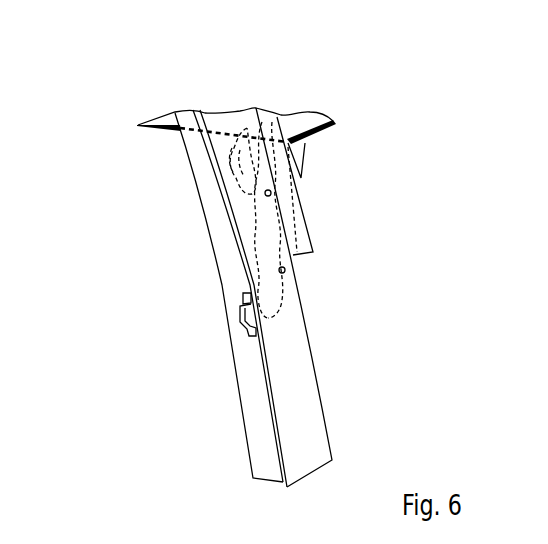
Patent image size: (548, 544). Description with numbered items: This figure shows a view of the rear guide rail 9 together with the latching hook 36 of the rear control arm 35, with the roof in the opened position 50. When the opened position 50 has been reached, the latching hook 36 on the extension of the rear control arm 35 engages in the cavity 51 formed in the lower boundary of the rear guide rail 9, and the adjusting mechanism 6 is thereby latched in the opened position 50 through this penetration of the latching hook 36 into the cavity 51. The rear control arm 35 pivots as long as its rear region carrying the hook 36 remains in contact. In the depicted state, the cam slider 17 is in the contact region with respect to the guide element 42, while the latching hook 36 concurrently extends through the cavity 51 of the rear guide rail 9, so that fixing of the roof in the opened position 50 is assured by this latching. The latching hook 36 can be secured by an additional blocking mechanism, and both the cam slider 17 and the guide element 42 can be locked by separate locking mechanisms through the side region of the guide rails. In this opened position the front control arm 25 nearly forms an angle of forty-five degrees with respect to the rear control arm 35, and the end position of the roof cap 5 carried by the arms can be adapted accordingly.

The roof cap 5 is at (300, 127).
The adjusting mechanism 6 is at (196, 237).
The rear guide rail 9 is at (300, 343).
The cam slider 17 is at (247, 125).
The front control arm 25 is at (274, 112).
The rear control arm 35 is at (301, 152).
The latching hook 36 is at (240, 316).
The guide element 42 is at (317, 234).
The opened position 50 is at (172, 330).
The cavity 51 is at (241, 305).